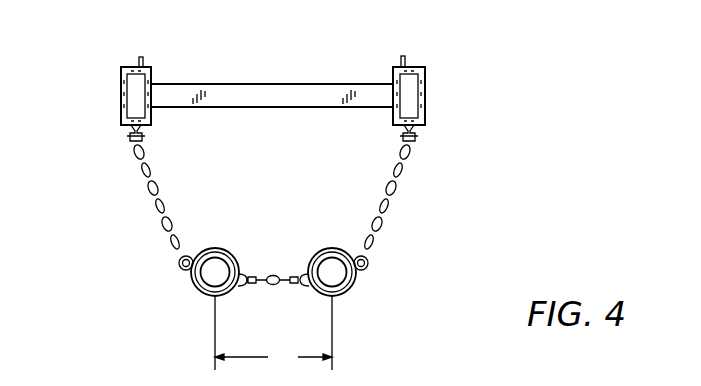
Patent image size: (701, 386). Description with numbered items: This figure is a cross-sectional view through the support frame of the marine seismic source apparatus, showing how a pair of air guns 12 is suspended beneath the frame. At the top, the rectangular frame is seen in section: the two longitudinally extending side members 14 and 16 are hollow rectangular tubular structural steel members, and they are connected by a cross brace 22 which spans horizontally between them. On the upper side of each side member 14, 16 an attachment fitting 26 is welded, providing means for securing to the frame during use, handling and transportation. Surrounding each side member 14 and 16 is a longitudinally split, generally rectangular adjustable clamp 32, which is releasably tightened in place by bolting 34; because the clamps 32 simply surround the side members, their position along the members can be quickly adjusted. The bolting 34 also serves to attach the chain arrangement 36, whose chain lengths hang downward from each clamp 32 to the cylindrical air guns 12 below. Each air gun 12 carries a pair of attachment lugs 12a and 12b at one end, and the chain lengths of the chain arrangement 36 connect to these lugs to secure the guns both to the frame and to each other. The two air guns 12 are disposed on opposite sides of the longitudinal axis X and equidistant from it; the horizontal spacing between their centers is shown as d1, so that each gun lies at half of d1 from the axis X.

The air gun 12 is at (208, 275).
The attachment lug 12a is at (185, 268).
The attachment lug 12b is at (243, 287).
The side member 14 is at (420, 96).
The side member 16 is at (125, 97).
The cross brace 22 is at (268, 88).
The attachment fitting 26 is at (145, 56).
The adjustable clamp 32 is at (425, 70).
The bolting 34 is at (420, 133).
The chain arrangement 36 is at (147, 193).
The longitudinal axis X— X is at (273, 271).
The horizontal width distance d1 is at (273, 334).